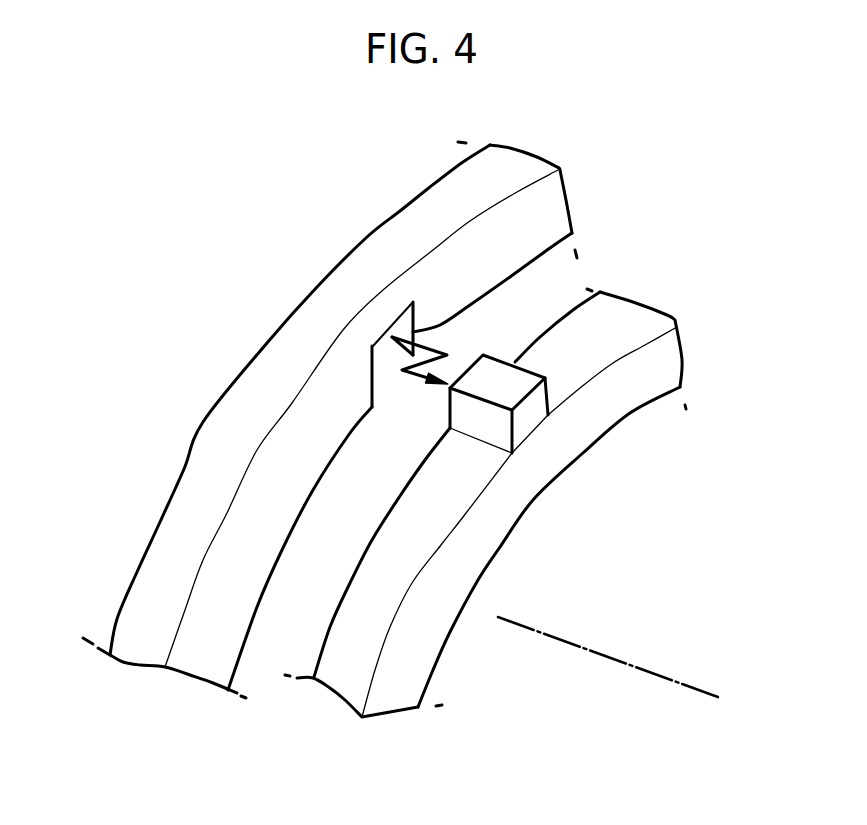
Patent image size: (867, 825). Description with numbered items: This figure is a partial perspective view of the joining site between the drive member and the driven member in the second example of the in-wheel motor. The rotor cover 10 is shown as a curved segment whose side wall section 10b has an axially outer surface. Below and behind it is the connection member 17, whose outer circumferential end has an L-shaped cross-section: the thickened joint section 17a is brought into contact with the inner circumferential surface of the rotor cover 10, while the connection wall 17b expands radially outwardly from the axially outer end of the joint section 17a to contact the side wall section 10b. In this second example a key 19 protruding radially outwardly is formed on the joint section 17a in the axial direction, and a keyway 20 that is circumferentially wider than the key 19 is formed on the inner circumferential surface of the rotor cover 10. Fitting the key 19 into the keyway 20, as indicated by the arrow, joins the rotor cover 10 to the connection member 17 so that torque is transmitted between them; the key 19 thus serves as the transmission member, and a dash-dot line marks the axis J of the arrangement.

The rotor cover 10 is at (527, 214).
The side wall section 10b is at (257, 524).
The keyway 20 is at (376, 359).
The connection member 17 is at (489, 640).
The joint section 17a is at (455, 577).
The connection wall 17b is at (570, 514).
The key 19 is at (527, 417).
The axis J is at (616, 665).